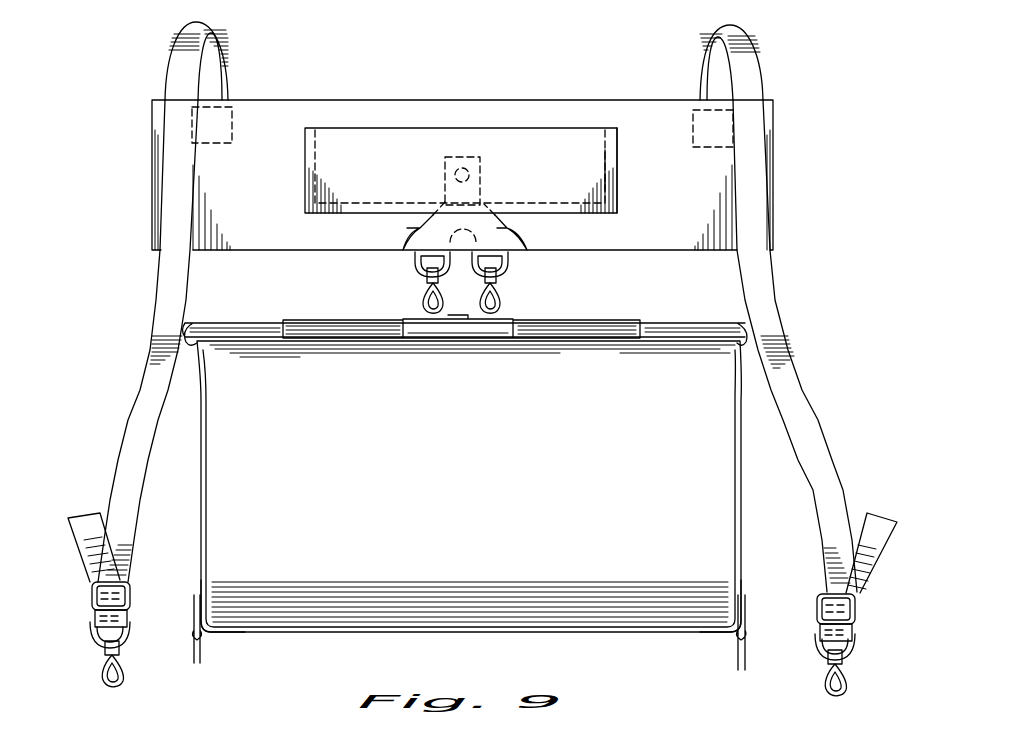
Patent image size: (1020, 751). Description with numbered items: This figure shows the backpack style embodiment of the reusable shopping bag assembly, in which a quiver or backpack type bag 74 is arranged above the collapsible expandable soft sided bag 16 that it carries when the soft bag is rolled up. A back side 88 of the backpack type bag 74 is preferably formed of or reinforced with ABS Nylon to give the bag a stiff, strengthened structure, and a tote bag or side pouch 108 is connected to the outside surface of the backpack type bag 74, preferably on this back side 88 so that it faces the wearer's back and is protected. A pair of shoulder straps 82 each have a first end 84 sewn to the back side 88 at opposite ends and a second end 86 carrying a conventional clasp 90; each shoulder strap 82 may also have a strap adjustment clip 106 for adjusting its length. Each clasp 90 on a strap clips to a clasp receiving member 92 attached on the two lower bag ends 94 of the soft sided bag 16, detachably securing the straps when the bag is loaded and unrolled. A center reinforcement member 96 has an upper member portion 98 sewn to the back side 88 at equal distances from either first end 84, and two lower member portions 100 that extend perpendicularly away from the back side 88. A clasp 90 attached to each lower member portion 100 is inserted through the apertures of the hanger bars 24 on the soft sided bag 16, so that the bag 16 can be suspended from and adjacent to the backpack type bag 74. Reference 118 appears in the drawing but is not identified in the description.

The collapsible expandable soft sided bag 16 is at (215, 530).
The hanger bar 24 is at (247, 330).
The quiver or backpack type bag 74 is at (318, 100).
The shoulder strap 82 is at (167, 313).
The first end 84 is at (222, 45).
The second end 86 is at (90, 575).
The back side 88 is at (424, 115).
The clasp 90 is at (425, 288).
The clasp receiving member 92 is at (197, 665).
The lower bag end 94 is at (205, 590).
The center reinforcement member 96 is at (492, 218).
The upper member portion 98 is at (482, 176).
The lower member portion 100 is at (413, 240).
The strap adjustment clip 106 is at (92, 606).
The side pouch 108 is at (368, 155).
The flap edge 118 is at (572, 128).